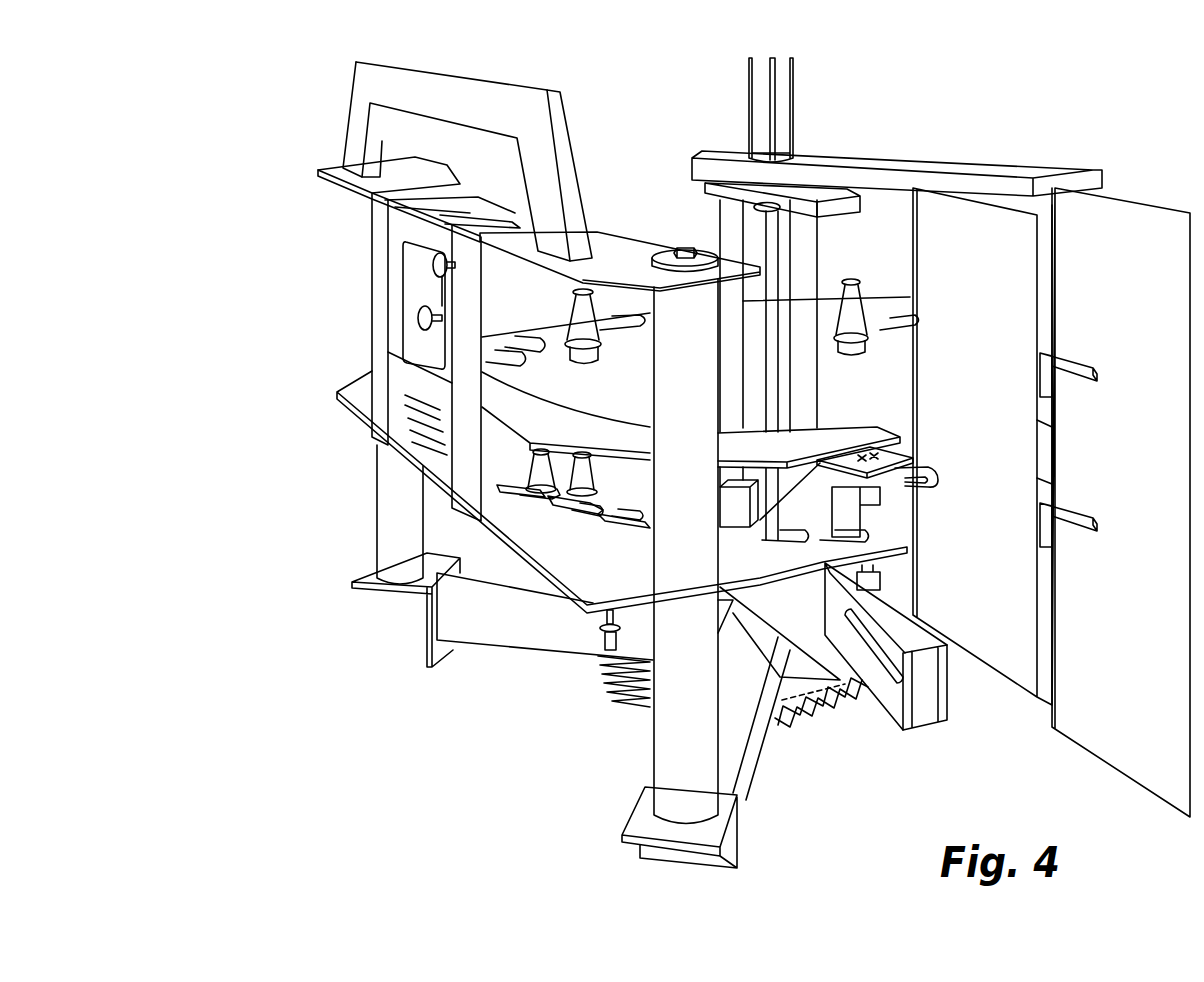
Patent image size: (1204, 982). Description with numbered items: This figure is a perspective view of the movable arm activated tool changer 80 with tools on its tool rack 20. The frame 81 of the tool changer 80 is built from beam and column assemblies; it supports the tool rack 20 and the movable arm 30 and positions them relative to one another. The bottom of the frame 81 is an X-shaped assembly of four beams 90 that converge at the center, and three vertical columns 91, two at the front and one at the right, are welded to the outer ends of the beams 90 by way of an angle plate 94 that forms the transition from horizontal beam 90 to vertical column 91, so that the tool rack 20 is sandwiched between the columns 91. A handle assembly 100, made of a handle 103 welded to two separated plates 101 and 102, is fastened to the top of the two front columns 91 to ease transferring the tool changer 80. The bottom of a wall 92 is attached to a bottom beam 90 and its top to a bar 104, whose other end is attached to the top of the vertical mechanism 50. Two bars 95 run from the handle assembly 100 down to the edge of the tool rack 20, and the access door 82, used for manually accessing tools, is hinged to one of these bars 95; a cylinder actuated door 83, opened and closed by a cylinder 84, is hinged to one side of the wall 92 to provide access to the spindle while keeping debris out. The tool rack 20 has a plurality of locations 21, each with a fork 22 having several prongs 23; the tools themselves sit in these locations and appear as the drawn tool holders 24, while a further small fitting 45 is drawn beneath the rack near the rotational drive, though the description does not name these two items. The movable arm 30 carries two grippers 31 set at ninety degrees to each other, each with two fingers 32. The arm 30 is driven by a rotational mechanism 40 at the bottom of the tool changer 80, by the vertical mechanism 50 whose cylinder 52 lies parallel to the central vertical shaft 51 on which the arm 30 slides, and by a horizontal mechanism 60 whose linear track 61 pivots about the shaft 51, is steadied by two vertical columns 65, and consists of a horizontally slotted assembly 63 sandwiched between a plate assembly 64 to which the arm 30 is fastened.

The tool rack 20 is at (628, 478).
The locations 21 is at (597, 538).
The fork 22 is at (641, 528).
The prongs 23 is at (640, 526).
The cone fixture 24 is at (575, 318).
The movable arm 30 is at (915, 477).
The grippers 31 is at (936, 481).
The fingers 32 is at (926, 496).
The rotational mechanism 40 is at (620, 716).
The bolt 45 is at (600, 641).
The vertical mechanism 50 is at (816, 282).
The vertical shaft 51 is at (785, 259).
The cylinder 52 is at (790, 72).
The horizontal mechanism 60 is at (883, 693).
The linear track 61 is at (888, 697).
The assembly 63 is at (897, 738).
The plate assembly 64 is at (811, 614).
The vertical columns 65 is at (730, 232).
The tool changer 80 is at (720, 465).
The frame 81 is at (372, 481).
The access door 82 is at (400, 218).
The cylinder actuated door 83 is at (1174, 240).
The cylinder 84 is at (1057, 423).
The beams 90 is at (498, 656).
The vertical columns 91 is at (384, 519).
The wall 92 is at (972, 216).
The angle plate 94 is at (380, 619).
The bars 95 is at (380, 266).
The handle assembly 100 is at (660, 158).
The plate 101 is at (400, 170).
The plate 102 is at (607, 242).
The handle 103 is at (468, 100).
The bar 104 is at (882, 180).